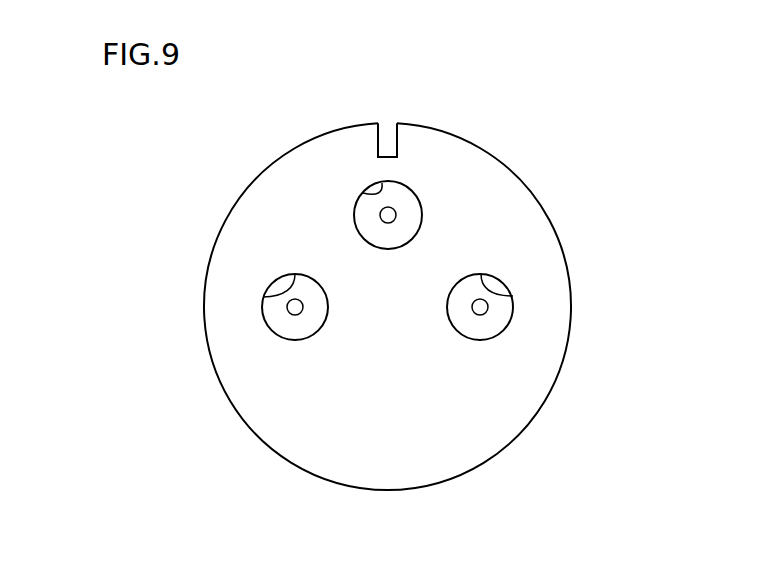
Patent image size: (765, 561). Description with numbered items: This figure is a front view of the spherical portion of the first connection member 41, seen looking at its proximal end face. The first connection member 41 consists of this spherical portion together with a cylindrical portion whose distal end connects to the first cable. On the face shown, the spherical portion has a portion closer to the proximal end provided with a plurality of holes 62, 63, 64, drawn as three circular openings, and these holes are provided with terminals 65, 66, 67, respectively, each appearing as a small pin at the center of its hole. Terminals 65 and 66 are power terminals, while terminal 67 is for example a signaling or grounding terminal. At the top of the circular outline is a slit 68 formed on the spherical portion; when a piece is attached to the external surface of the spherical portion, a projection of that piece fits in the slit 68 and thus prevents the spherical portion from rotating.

The first connection member 41 is at (240, 155).
The hole 62 is at (513, 296).
The hole 63 is at (263, 297).
The hole 64 is at (364, 191).
The terminal 65 is at (488, 308).
The terminal 66 is at (287, 308).
The terminal 67 is at (395, 212).
The slit 68 is at (380, 141).